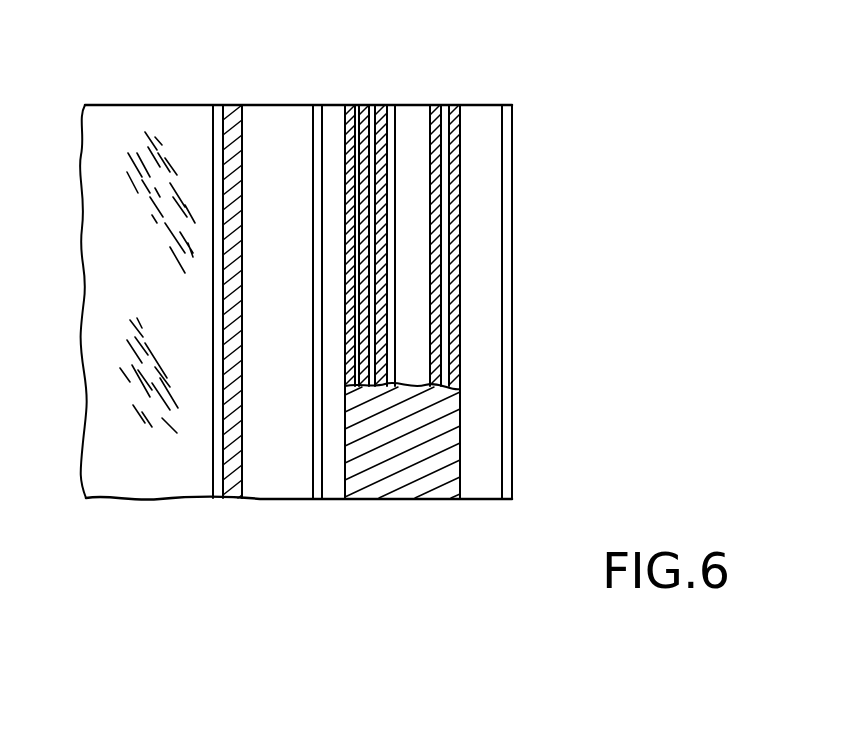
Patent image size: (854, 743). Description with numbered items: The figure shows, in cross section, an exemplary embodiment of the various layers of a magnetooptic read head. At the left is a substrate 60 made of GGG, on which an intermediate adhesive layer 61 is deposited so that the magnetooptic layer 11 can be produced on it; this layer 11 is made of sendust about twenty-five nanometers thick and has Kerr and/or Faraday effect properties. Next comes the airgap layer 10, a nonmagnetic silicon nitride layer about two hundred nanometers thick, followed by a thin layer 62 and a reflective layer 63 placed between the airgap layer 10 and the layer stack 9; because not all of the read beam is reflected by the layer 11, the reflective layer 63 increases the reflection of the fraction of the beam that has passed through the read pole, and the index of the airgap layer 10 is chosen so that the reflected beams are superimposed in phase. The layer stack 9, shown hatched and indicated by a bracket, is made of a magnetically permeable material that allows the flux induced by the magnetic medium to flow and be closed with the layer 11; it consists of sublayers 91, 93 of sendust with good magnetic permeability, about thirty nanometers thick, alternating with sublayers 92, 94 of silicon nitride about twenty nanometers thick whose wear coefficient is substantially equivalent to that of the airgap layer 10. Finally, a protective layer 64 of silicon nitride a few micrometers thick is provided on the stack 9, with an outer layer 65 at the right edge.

The substrate 60 is at (118, 120).
The intermediate adhesive layer 61 is at (214, 118).
The magnetooptic layer 11 is at (240, 118).
The airgap layer 10 is at (273, 117).
The layer 62 is at (317, 118).
The reflective layer 63 is at (339, 112).
The layer stack 9 is at (460, 505).
The magnetically permeable sublayer 91 is at (355, 112).
The low-wear sublayer 92 is at (363, 110).
The magnetically permeable sublayer 93 is at (381, 112).
The low-wear sublayer 94 is at (402, 114).
The protective layer 64 is at (482, 117).
The outer layer 65 is at (512, 114).